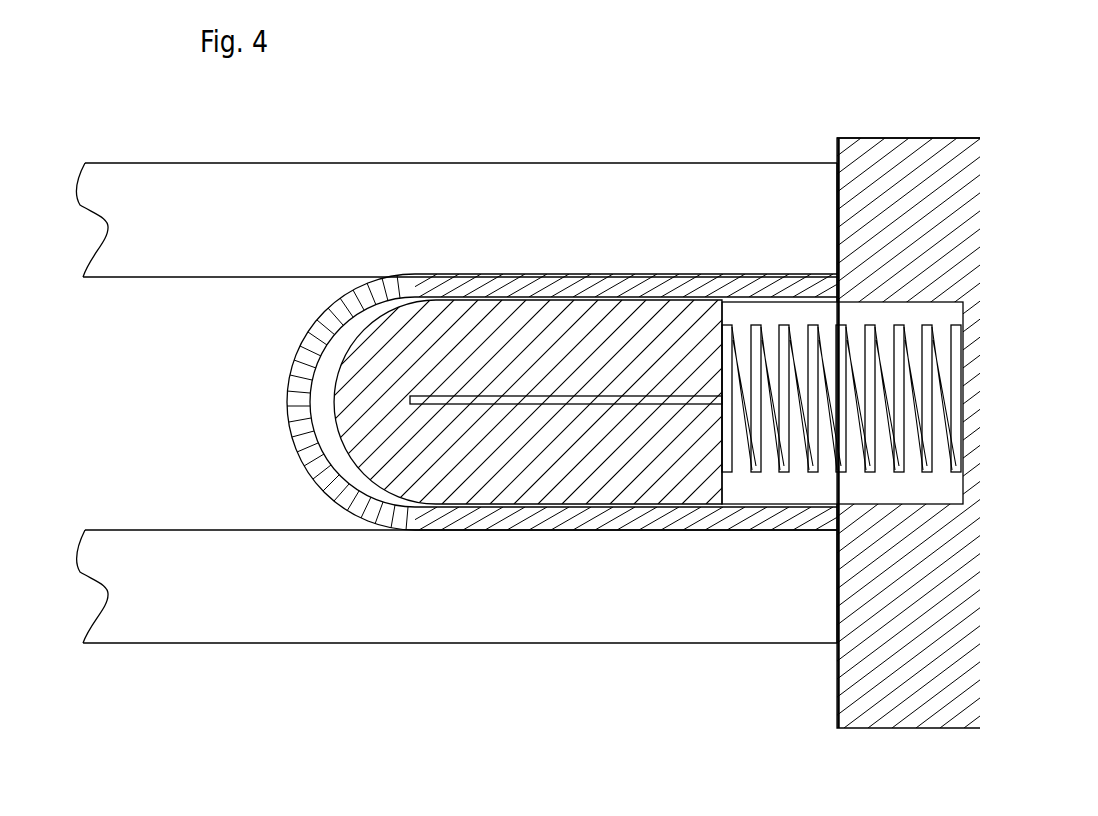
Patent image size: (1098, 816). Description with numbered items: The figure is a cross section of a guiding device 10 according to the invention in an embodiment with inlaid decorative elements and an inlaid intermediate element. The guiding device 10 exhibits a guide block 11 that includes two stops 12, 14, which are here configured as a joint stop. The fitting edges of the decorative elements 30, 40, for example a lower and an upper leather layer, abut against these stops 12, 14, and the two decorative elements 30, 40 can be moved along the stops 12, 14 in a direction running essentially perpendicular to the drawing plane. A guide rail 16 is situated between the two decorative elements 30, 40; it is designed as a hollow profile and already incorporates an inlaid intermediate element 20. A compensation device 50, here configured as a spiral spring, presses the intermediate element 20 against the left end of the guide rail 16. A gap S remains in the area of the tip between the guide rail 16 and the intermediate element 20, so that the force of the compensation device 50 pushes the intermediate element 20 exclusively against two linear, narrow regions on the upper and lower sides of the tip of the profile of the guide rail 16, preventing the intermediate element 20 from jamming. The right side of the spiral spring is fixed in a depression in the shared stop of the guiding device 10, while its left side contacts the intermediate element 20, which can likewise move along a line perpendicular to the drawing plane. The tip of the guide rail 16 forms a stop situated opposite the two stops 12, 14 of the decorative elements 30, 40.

The guiding device 10 is at (575, 420).
The guide block 11 is at (895, 138).
The stop 12 is at (835, 643).
The stop 14 is at (835, 188).
The guide rail 16 is at (306, 468).
The intermediate element 20 is at (335, 401).
The decorative element 30 is at (466, 615).
The decorative element 40 is at (485, 215).
The compensation device 50 is at (937, 326).
The gap S is at (150, 422).